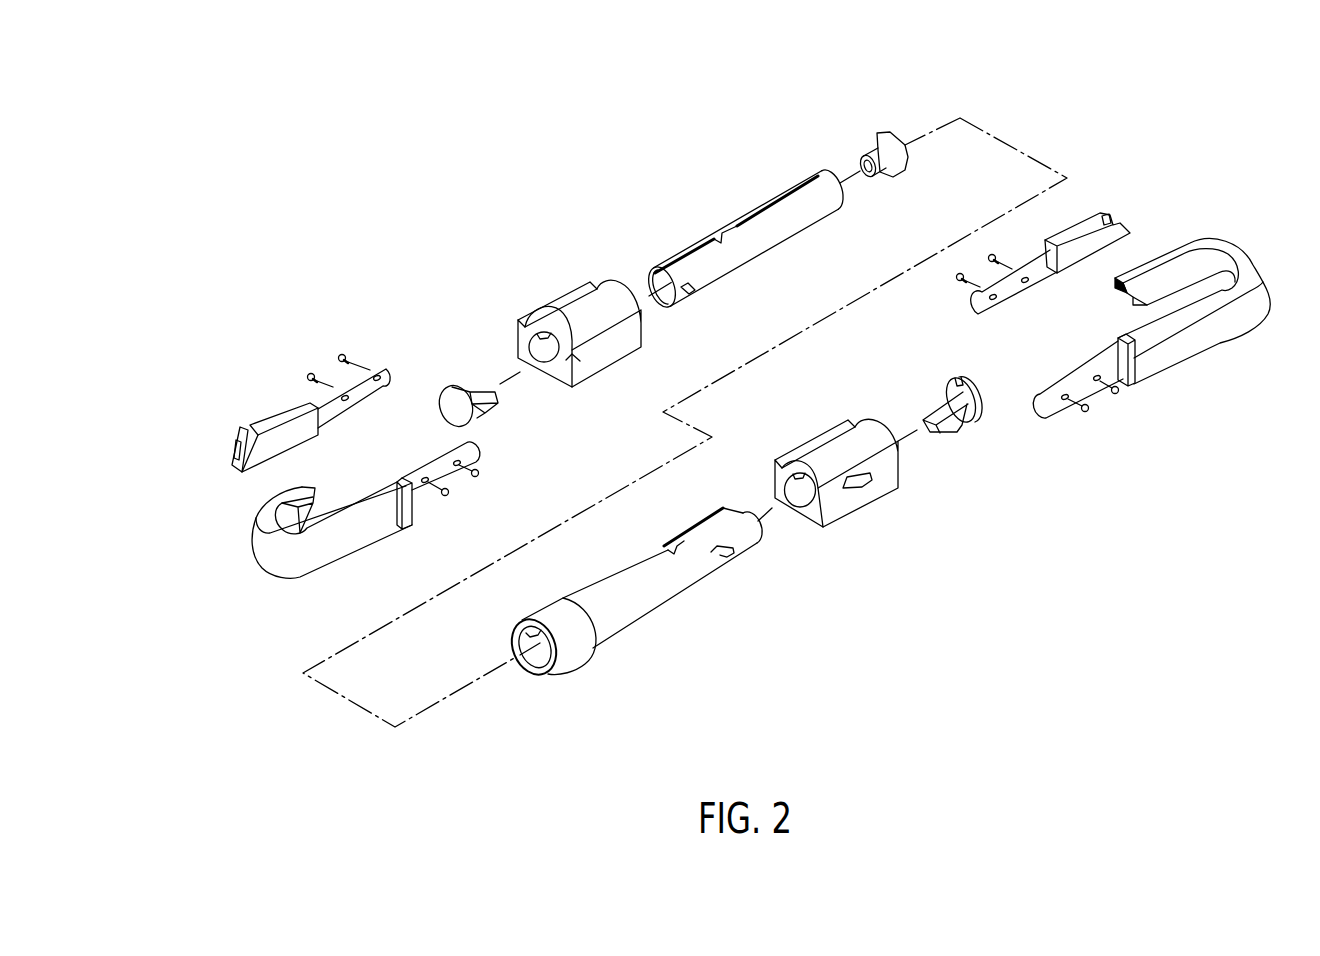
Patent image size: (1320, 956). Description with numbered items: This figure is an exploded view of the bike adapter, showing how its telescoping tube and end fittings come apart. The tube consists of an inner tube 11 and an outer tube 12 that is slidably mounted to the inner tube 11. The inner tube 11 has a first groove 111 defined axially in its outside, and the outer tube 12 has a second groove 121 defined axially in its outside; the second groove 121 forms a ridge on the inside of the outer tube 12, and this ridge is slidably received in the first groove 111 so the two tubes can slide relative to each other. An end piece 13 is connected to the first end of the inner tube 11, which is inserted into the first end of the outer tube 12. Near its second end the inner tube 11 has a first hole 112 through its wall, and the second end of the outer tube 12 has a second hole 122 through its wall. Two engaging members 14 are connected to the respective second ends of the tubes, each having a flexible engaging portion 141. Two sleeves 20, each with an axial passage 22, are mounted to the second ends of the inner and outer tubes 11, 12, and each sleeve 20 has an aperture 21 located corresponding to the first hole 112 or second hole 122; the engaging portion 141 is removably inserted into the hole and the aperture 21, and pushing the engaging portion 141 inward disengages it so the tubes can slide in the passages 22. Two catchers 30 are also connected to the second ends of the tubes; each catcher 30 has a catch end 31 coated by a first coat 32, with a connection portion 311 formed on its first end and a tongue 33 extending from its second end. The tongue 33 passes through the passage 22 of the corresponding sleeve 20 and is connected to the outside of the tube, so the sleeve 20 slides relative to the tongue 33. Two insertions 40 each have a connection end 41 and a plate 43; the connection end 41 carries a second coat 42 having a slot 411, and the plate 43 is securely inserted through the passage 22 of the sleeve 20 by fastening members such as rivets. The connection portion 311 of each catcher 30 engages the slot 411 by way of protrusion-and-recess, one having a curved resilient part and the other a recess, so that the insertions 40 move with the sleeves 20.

The inner tube 11 is at (709, 237).
The first groove 111 is at (670, 263).
The first hole 112 is at (687, 288).
The outer tube 12 is at (662, 621).
The second groove 121 is at (685, 540).
The second hole 122 is at (727, 555).
The end piece 13 is at (875, 148).
The engaging member 14 is at (740, 434).
The engaging portion 141 is at (485, 407).
The sleeve 20 is at (712, 417).
The aperture 21 is at (570, 362).
The passage 22 is at (537, 345).
The catcher 30 is at (1134, 384).
The catch end 31 is at (719, 418).
The connection portion 311 is at (1130, 287).
The first coat 32 is at (1213, 247).
The tongue 33 is at (1060, 407).
The insertion 40 is at (652, 300).
The connection end 41 is at (262, 415).
The slot 411 is at (237, 452).
The second coat 42 is at (652, 300).
The plate 43 is at (373, 362).